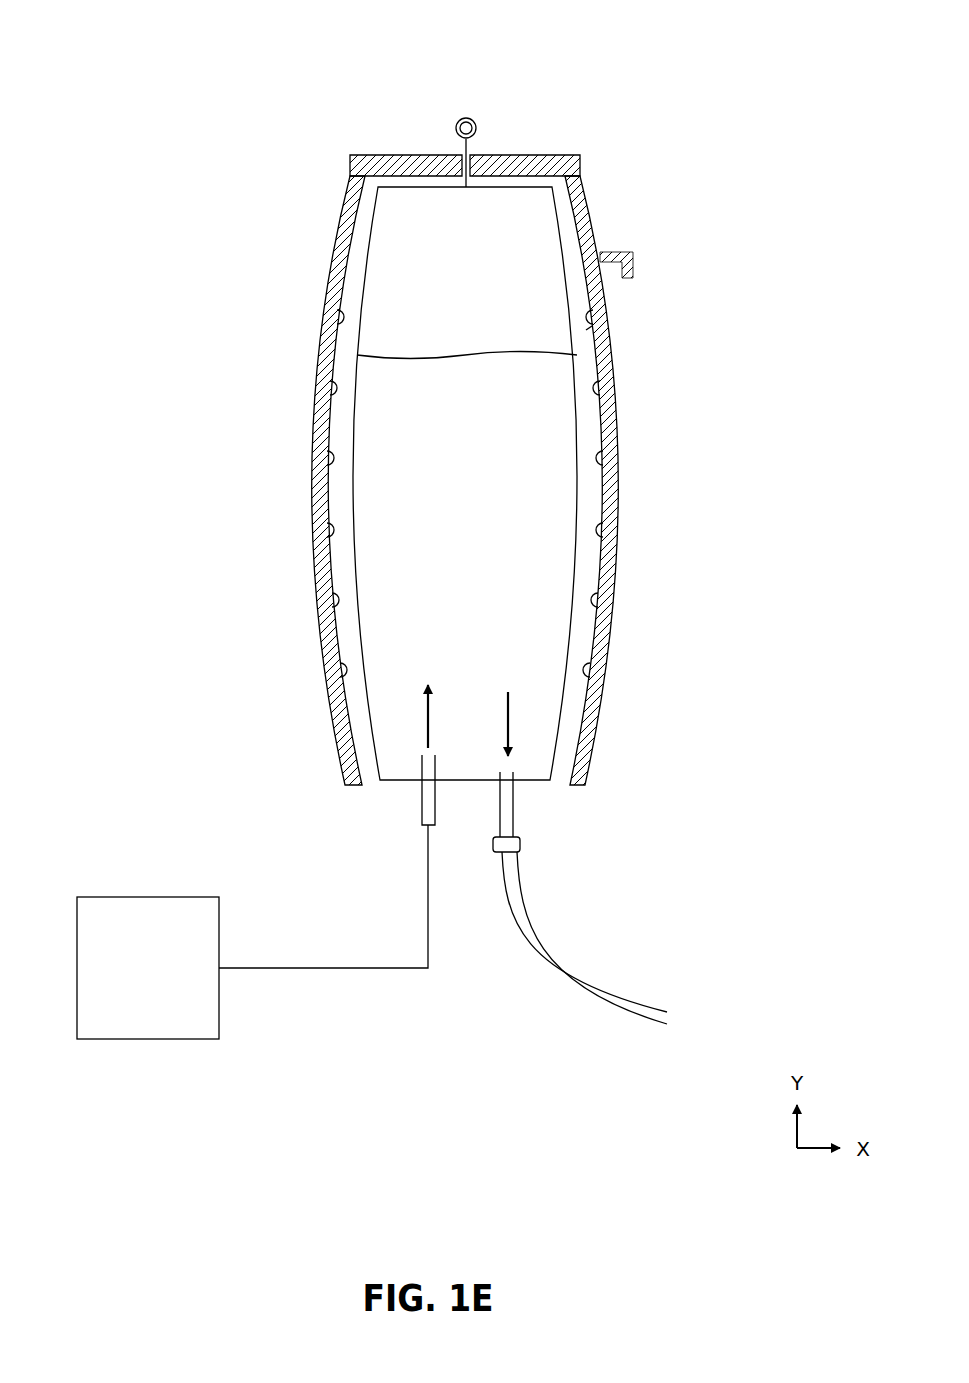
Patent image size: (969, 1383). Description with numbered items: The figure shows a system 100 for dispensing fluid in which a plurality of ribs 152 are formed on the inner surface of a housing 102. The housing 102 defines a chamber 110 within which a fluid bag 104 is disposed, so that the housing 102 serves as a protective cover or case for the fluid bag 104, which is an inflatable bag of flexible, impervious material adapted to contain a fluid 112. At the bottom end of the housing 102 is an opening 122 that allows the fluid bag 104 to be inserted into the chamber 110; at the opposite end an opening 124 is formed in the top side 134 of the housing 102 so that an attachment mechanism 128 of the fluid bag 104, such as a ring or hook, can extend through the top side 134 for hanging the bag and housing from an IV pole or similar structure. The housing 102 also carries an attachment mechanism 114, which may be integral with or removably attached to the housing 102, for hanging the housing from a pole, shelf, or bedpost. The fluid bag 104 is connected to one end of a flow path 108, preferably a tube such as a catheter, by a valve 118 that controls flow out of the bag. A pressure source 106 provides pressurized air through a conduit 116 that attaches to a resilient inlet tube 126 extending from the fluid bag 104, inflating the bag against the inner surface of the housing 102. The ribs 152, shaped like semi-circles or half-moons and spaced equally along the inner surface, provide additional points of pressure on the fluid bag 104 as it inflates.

The system for dispensing fluid 100 is at (675, 72).
The housing 102 is at (591, 206).
The fluid bag 104 is at (367, 252).
The pressure source 106 is at (129, 1009).
The flow path 108 is at (531, 942).
The chamber 110 is at (585, 340).
The fluid 112 is at (481, 475).
The attachment mechanism 114 is at (633, 258).
The conduit 116 is at (323, 896).
The valve 118 is at (521, 850).
The opening 122 is at (545, 803).
The opening 124 is at (460, 157).
The resilient inlet tube 126 is at (420, 810).
The attachment mechanism 128 is at (478, 122).
The top side 134 is at (560, 154).
The ribs 152 is at (342, 388).